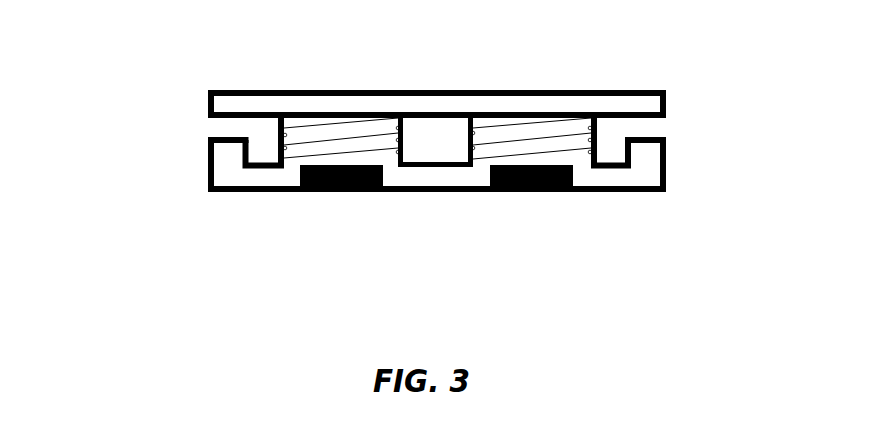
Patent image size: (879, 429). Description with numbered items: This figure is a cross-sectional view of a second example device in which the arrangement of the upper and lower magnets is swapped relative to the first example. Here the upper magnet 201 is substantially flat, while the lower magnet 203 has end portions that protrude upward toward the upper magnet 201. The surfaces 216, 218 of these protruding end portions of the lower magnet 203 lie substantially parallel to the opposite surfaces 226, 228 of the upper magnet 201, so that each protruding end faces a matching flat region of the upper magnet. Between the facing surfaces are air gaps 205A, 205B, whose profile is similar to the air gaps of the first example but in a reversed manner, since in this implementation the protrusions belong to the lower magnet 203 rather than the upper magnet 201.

The upper magnet 201 is at (437, 64).
The lower magnet 203 is at (422, 172).
The air gap 205A is at (148, 152).
The air gap 205B is at (712, 156).
The surface of protruding end portion of lower magnet 216 is at (218, 140).
The surface of protruding end portion of lower magnet 218 is at (657, 138).
The opposite surface of upper magnet 226 is at (228, 113).
The opposite surface of upper magnet 228 is at (650, 106).